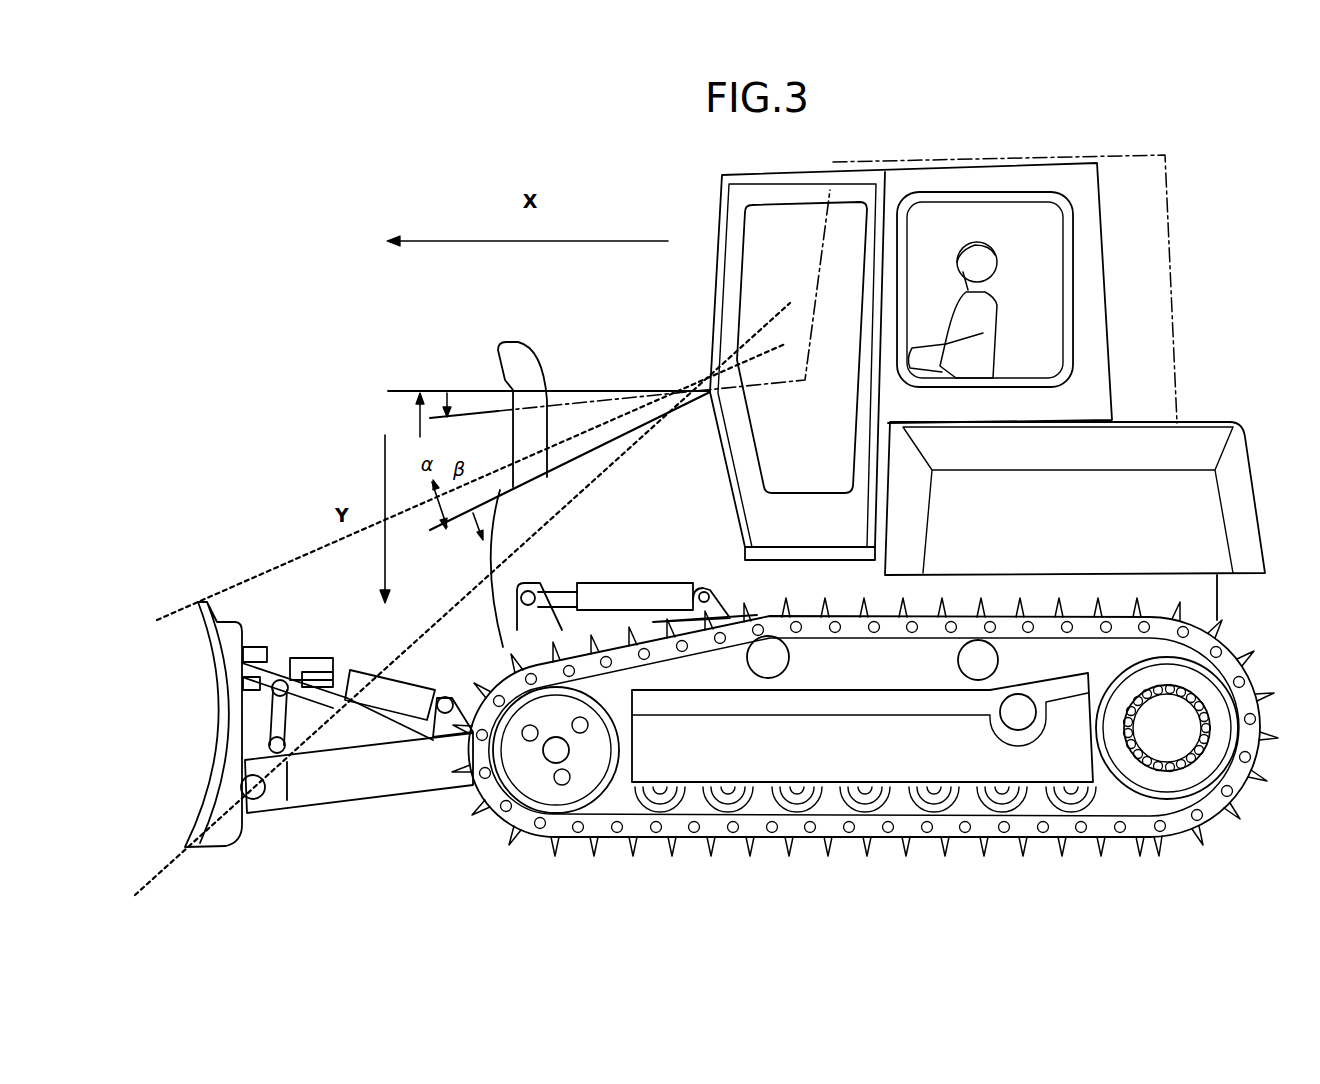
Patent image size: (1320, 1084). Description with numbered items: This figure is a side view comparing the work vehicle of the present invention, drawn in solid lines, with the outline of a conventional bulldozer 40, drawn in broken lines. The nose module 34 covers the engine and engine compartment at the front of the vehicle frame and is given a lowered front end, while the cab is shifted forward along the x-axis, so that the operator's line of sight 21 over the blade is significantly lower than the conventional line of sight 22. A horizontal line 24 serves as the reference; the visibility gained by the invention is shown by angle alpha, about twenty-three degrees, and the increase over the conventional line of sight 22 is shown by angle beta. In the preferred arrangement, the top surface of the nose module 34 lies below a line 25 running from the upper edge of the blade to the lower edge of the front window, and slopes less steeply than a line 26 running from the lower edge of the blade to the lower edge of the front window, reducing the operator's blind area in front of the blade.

The line of sight 21 is at (441, 530).
The line of sight 22 is at (475, 415).
The horizontal line 24 is at (426, 391).
The line 25 is at (185, 605).
The line 26 is at (160, 870).
The nose module 34 is at (640, 524).
The conventional bulldozer 40 is at (598, 406).